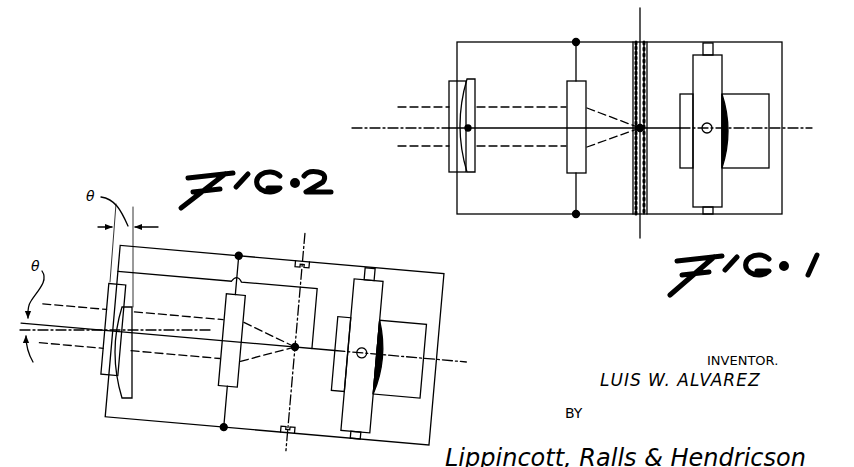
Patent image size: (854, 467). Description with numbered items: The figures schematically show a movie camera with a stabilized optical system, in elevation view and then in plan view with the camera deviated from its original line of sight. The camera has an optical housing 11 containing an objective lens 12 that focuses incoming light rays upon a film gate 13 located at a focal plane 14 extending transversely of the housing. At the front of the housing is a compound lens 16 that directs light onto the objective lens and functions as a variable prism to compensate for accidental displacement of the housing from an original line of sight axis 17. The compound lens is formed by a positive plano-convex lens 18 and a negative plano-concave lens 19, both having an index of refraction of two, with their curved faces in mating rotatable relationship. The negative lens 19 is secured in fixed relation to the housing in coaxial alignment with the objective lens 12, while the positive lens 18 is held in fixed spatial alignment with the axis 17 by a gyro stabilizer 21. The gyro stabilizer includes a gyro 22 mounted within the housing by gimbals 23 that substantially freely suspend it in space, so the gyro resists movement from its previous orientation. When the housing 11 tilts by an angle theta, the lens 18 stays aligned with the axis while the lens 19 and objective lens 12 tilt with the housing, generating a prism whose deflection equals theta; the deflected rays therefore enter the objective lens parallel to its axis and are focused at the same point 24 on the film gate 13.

In FIG. 1, the optical housing 11 is at (537, 42).
In FIG. 2, the optical housing 11 is at (208, 247).
In FIG. 1, the objective lens 12 is at (586, 83).
In FIG. 2, the objective lens 12 is at (240, 300).
In FIG. 1, the film gate 13 is at (633, 195).
In FIG. 1, the focal plane 14 is at (640, 22).
In FIG. 2, the focal plane 14 is at (304, 239).
In FIG. 1, the compound lens 16 is at (459, 115).
In FIG. 2, the compound lens 16 is at (113, 305).
In FIG. 1, the original line of sight axis 17 is at (372, 128).
In FIG. 2, the original line of sight axis 17 is at (63, 334).
In FIG. 1, the positive plano-convex lens 18 is at (474, 167).
In FIG. 2, the positive plano-convex lens 18 is at (134, 397).
In FIG. 1, the negative plano-concave lens 19 is at (450, 172).
In FIG. 2, the negative plano-concave lens 19 is at (103, 376).
In FIG. 1, the gyro stabilizer 21 is at (748, 116).
In FIG. 2, the gyro stabilizer 21 is at (403, 341).
In FIG. 1, the gyro 22 is at (769, 106).
In FIG. 2, the gyro 22 is at (426, 348).
In FIG. 1, the gimbals 23 is at (709, 58).
In FIG. 2, the gimbals 23 is at (381, 282).
In FIG. 1, the focal point 24 is at (643, 127).
In FIG. 2, the focal point 24 is at (296, 348).